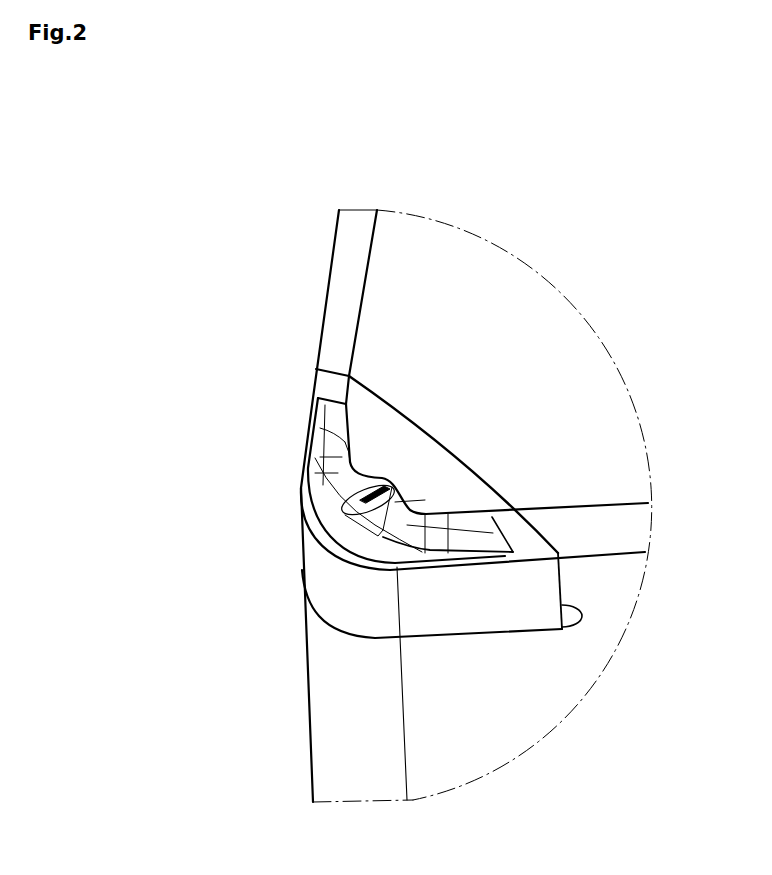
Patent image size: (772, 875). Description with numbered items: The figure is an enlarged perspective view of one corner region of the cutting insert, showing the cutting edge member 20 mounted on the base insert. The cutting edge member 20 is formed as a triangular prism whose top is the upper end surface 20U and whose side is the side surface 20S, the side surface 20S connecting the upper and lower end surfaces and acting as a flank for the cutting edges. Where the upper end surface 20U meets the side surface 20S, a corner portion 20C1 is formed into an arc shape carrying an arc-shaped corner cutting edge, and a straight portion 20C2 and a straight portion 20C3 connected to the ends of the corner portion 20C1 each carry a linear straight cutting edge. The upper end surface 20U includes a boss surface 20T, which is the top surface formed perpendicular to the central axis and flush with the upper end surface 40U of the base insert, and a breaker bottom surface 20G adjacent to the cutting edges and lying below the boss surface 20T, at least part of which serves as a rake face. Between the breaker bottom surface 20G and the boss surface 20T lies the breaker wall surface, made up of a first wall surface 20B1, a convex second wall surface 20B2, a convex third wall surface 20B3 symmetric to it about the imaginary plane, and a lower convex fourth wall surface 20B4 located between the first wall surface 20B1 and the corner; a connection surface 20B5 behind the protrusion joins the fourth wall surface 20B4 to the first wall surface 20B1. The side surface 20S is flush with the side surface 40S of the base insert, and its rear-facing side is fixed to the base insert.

The cutting edge member 20 is at (234, 634).
The side surface 20S is at (322, 568).
The upper end surface 20U is at (396, 446).
The boss surface 20T is at (368, 427).
The breaker bottom surface 20G is at (358, 512).
The first wall surface 20B1 is at (350, 452).
The second wall surface 20B2 is at (338, 473).
The third wall surface 20B3 is at (407, 525).
The fourth wall surface 20B4 is at (352, 510).
The connection surface 20B5 is at (403, 500).
The corner portion 20C1 is at (343, 565).
The straight portion 20C2 is at (463, 568).
The straight portion 20C3 is at (308, 463).
The upper end surface of the base insert 40U is at (393, 310).
The side surface of the base insert 40S is at (498, 715).